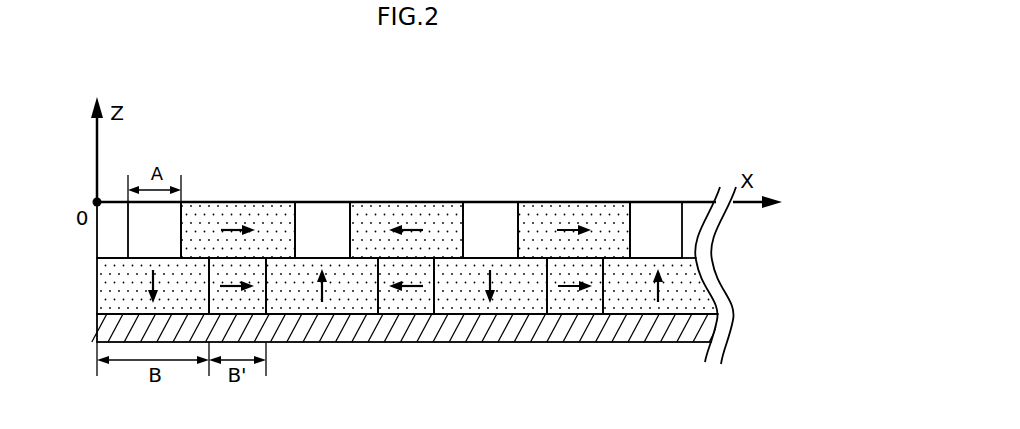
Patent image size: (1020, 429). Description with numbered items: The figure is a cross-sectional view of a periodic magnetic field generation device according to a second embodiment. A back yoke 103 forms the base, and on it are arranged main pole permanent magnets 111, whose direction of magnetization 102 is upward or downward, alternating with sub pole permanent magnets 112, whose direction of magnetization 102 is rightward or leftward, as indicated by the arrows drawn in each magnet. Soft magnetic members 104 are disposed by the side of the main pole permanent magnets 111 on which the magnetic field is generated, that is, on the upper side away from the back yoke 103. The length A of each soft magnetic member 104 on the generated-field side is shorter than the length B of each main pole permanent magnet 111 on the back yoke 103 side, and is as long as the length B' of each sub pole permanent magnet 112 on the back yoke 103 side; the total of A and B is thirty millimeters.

The direction of magnetization 102 is at (323, 297).
The back yoke 103 is at (623, 322).
The soft magnetic member 104 is at (168, 225).
The main pole permanent magnet 111 is at (185, 272).
The sub pole permanent magnet 112 is at (420, 230).